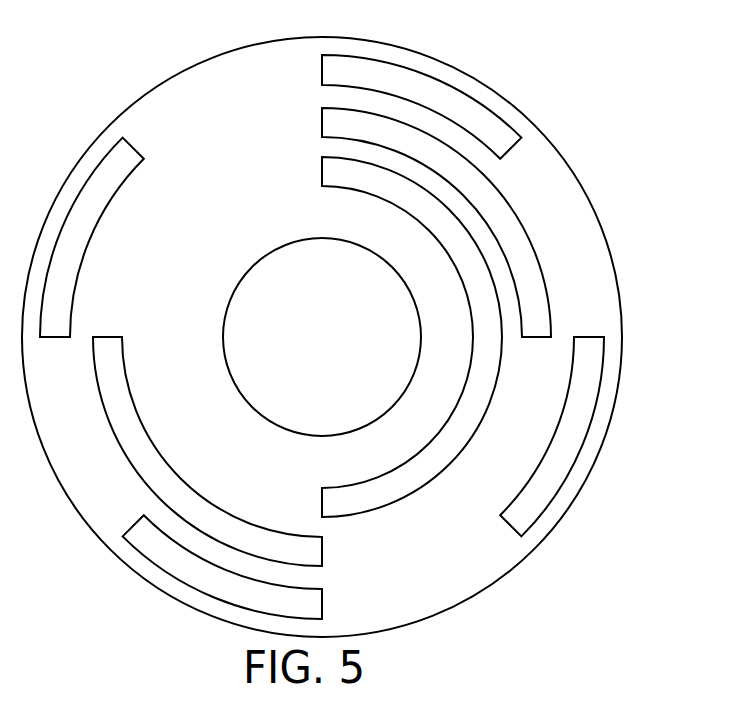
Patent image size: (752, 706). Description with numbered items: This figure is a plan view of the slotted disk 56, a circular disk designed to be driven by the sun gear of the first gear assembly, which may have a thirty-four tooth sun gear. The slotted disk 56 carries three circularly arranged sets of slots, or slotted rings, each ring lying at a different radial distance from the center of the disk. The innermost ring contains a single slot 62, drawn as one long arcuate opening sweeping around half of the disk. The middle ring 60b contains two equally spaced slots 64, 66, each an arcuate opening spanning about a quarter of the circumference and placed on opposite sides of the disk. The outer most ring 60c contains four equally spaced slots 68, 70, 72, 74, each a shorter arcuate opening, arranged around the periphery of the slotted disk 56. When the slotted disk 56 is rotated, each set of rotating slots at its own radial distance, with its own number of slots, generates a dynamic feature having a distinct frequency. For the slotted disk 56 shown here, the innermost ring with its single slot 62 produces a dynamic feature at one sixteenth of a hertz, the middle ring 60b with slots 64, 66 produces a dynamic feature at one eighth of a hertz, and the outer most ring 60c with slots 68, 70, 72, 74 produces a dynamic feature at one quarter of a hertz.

The slotted disk 56 is at (572, 114).
The middle ring 60b is at (300, 123).
The outer most ring 60c is at (300, 69).
The single slot 62 is at (400, 486).
The slot 64 is at (536, 339).
The slot 66 is at (220, 512).
The slot 68 is at (506, 154).
The slot 70 is at (506, 525).
The slot 72 is at (122, 532).
The slot 74 is at (130, 151).